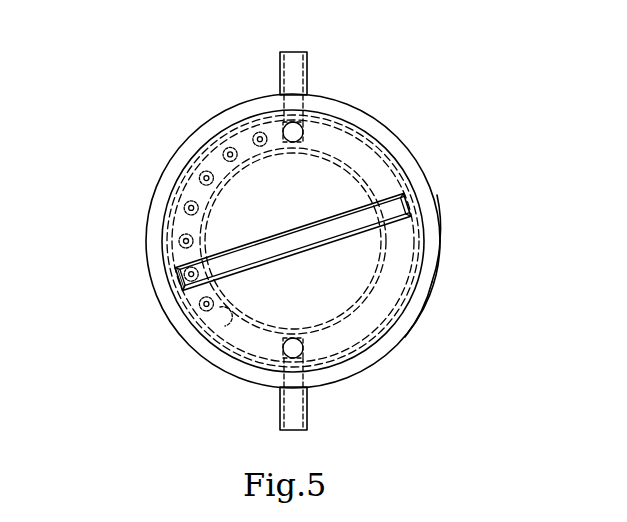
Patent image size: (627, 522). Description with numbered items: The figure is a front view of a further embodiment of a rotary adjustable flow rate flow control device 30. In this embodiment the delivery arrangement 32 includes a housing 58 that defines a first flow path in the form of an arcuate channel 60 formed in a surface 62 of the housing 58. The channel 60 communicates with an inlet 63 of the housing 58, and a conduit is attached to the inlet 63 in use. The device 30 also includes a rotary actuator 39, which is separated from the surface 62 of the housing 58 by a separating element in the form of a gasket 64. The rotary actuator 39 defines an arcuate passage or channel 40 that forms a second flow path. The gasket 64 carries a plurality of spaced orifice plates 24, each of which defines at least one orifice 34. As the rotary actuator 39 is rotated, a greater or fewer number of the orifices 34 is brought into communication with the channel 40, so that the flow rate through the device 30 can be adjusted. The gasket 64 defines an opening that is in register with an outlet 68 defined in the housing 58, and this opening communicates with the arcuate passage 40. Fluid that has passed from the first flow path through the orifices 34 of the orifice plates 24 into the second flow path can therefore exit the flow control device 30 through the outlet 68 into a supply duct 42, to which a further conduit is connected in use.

The rotary adjustable flow rate flow control device 30 is at (500, 133).
The delivery arrangement 32 is at (397, 138).
The gasket 64 is at (350, 124).
The surface 62 is at (421, 174).
The housing 58 is at (438, 241).
The rotary actuator 39 is at (429, 283).
The arcuate channel 60 is at (242, 137).
The arcuate passage 40 is at (380, 318).
The orifice plates 24 is at (202, 168).
The orifice 34 is at (171, 225).
The inlet 63 is at (280, 80).
The supply duct 42 is at (307, 408).
The outlet 68 is at (280, 350).